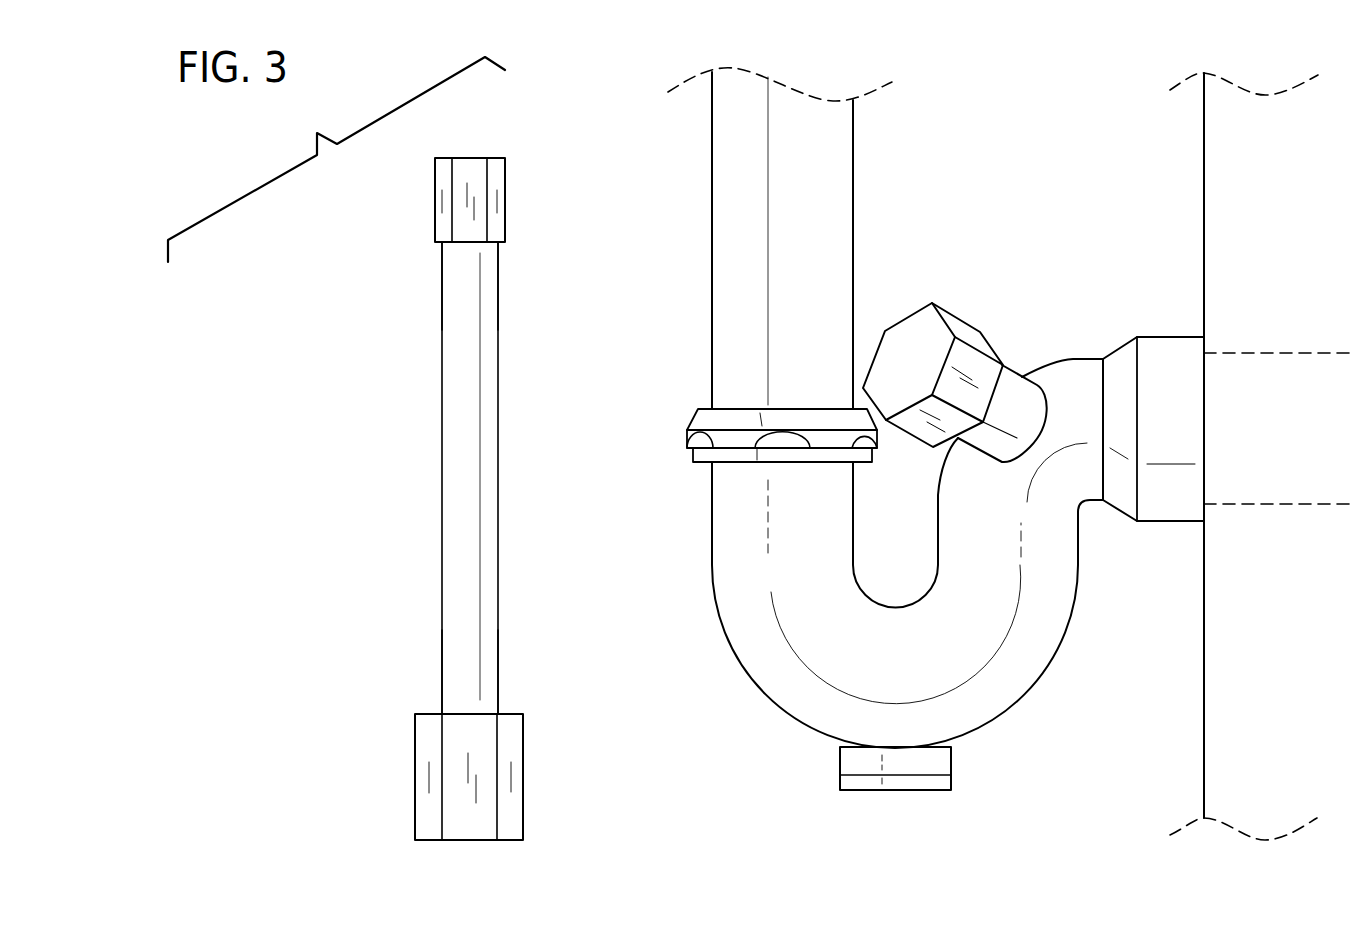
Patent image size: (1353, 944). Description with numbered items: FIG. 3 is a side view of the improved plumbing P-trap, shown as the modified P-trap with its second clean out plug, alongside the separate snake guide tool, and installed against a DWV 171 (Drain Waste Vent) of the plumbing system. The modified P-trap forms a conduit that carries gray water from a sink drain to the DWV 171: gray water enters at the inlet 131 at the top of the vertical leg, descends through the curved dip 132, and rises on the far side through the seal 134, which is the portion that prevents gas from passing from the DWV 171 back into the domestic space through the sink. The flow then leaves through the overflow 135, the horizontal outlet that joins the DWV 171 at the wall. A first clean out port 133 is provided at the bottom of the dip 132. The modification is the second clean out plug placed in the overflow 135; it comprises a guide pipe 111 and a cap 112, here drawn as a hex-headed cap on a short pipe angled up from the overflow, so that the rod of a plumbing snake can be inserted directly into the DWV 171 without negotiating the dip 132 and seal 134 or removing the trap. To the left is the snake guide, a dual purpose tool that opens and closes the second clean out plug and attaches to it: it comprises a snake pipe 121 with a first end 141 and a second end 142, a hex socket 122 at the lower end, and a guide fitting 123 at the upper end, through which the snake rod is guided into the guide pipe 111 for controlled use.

The guide pipe 111 is at (1008, 393).
The cap 112 is at (945, 313).
The snake pipe 121 is at (498, 475).
The hex socket 122 is at (515, 775).
The guide fitting 123 is at (507, 200).
The inlet 131 is at (720, 482).
The dip 132 is at (793, 692).
The first clean out port 133 is at (892, 790).
The seal 134 is at (1042, 595).
The overflow 135 is at (1088, 377).
The first end 141 is at (487, 706).
The second end 142 is at (490, 258).
The DWV 171 is at (1262, 348).